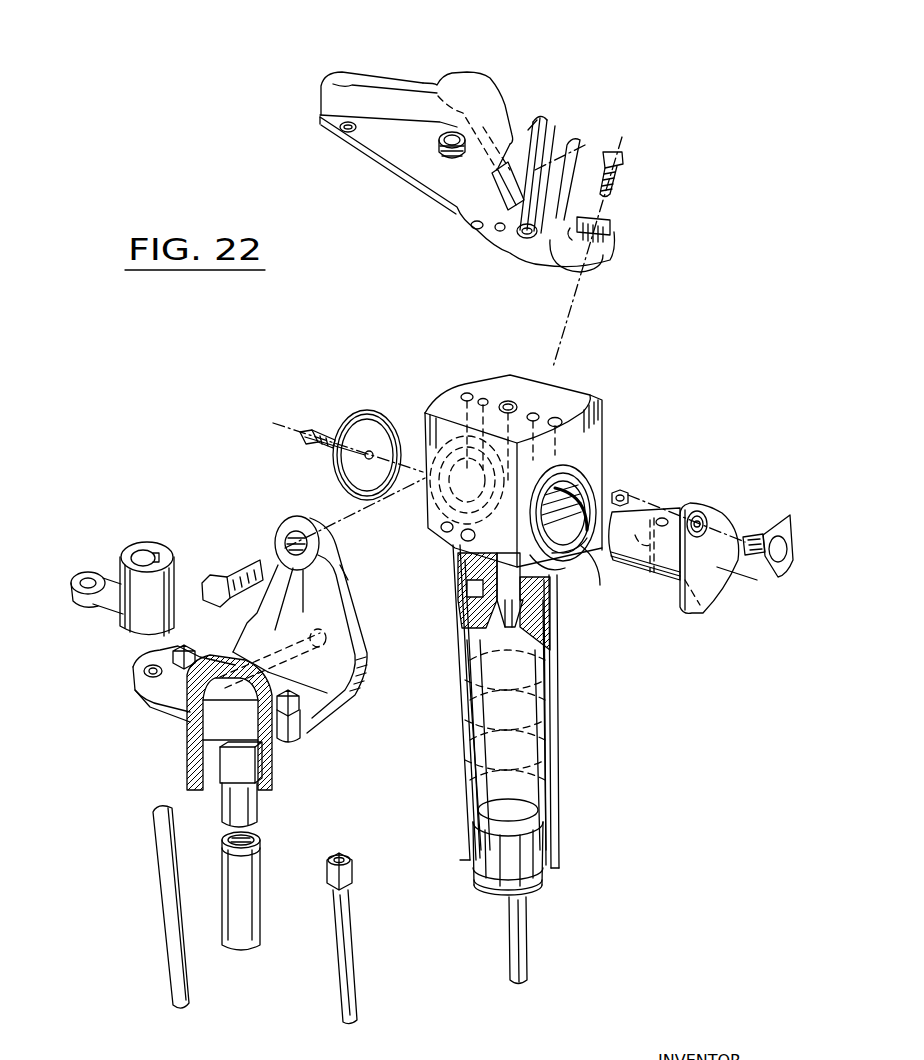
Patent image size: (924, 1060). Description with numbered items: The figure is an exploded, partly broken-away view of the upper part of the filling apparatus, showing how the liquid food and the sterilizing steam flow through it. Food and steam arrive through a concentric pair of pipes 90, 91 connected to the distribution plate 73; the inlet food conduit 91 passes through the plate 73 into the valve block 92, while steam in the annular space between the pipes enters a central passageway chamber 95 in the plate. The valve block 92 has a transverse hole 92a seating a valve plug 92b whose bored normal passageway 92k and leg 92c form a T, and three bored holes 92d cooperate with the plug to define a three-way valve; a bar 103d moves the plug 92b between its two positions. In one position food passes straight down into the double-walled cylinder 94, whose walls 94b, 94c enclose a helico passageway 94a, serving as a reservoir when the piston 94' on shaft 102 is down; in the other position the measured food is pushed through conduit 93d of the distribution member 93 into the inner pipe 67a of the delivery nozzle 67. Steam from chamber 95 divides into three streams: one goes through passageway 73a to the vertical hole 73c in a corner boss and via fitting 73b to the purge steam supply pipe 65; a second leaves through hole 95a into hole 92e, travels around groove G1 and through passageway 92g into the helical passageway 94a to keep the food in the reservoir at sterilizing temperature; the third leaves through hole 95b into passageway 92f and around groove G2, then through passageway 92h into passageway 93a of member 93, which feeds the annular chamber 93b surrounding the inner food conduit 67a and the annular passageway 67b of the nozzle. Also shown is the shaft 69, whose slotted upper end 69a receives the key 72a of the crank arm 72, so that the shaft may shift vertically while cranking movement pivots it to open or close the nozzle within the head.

The distribution plate 73 is at (411, 67).
The passageway 73a is at (512, 166).
The fitting 73b is at (355, 872).
The vertical hole 73c is at (462, 92).
The inlet food conduit 91 is at (560, 125).
The pipe 90 is at (580, 155).
The central passageway chamber 95 is at (565, 245).
The hole 95a is at (580, 240).
The hole 95b is at (498, 230).
The valve block 92 is at (619, 436).
The transverse hole 92a is at (585, 548).
The valve plug 92b is at (708, 504).
The leg 92c is at (702, 608).
The bored holes 92d is at (507, 402).
The hole 92e is at (531, 410).
The passageway 92f is at (488, 396).
The passageway 92g is at (548, 568).
The passageway 92h is at (442, 527).
The bored normal passageway 92k is at (644, 544).
The groove G1 is at (575, 480).
The groove G2 is at (455, 450).
The bar 103d is at (777, 565).
The cylinder 94 is at (574, 706).
The helico passageway 94a is at (455, 585).
The cylinder wall 94b is at (553, 714).
The cylinder wall 94c is at (558, 780).
The piston 94' is at (531, 858).
The shaft 102 is at (526, 950).
The distribution member 93 is at (362, 722).
The passageway 93a is at (225, 672).
The annular chamber 93b is at (222, 770).
The conduit 93d is at (352, 620).
The crank arm 72 is at (93, 642).
The key 72a is at (157, 552).
The shaft 69 is at (143, 873).
The slot 69a is at (172, 846).
The product delivery nozzle 67 is at (270, 932).
The inner pipe 67a is at (230, 848).
The annular passageway 67b is at (250, 850).
The purge steam supply pipe 65 is at (356, 975).